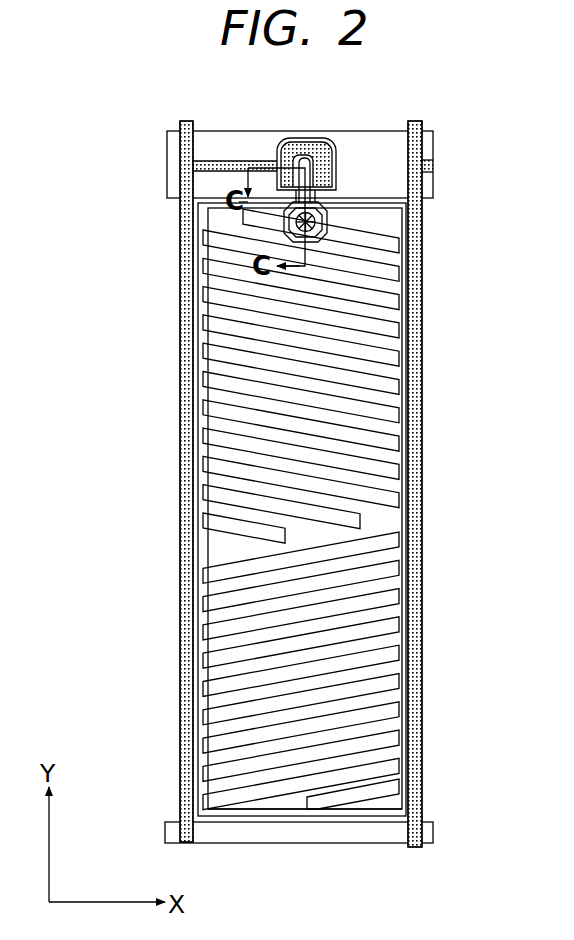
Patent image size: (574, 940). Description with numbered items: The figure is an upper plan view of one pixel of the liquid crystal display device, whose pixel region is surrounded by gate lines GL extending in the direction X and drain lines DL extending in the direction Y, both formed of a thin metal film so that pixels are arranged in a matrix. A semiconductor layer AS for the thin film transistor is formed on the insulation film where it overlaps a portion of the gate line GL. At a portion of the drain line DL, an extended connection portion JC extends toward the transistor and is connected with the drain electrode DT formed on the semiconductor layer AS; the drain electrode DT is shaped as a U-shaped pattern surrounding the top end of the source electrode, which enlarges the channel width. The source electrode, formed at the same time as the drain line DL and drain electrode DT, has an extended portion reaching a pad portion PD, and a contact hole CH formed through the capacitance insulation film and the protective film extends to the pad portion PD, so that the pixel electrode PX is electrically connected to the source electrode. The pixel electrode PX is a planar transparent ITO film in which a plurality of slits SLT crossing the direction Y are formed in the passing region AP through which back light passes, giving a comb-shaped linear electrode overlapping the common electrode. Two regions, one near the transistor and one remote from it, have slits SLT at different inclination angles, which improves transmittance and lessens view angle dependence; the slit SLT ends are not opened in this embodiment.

The gate line GL is at (168, 157).
The drain line DL is at (181, 419).
The connection portion JC is at (213, 161).
The pixel electrode PX is at (211, 366).
The slit SLT is at (214, 292).
The semiconductor layer AS is at (303, 138).
The drain electrode DT is at (327, 160).
The pad portion PD is at (328, 218).
The contact hole CH is at (322, 242).
The passing region AP is at (280, 810).